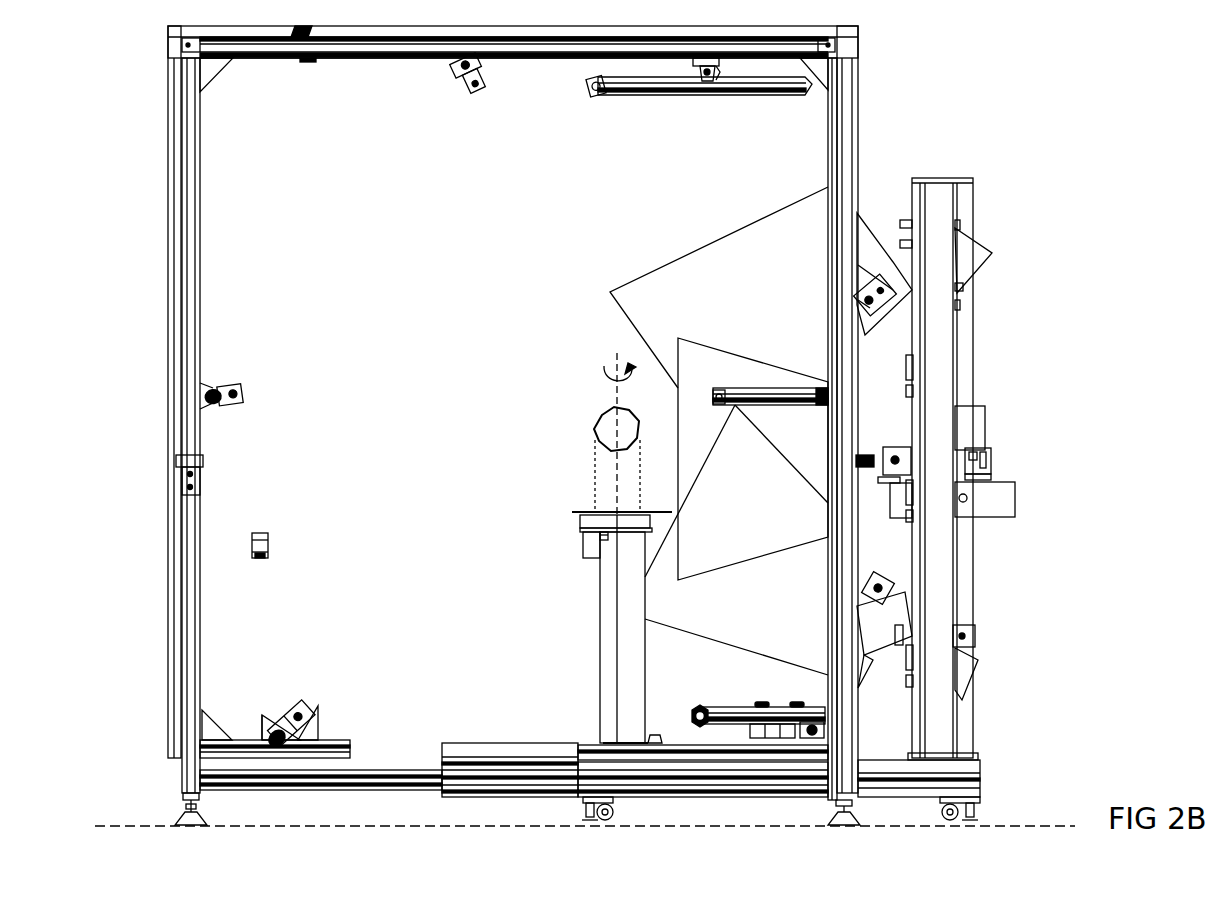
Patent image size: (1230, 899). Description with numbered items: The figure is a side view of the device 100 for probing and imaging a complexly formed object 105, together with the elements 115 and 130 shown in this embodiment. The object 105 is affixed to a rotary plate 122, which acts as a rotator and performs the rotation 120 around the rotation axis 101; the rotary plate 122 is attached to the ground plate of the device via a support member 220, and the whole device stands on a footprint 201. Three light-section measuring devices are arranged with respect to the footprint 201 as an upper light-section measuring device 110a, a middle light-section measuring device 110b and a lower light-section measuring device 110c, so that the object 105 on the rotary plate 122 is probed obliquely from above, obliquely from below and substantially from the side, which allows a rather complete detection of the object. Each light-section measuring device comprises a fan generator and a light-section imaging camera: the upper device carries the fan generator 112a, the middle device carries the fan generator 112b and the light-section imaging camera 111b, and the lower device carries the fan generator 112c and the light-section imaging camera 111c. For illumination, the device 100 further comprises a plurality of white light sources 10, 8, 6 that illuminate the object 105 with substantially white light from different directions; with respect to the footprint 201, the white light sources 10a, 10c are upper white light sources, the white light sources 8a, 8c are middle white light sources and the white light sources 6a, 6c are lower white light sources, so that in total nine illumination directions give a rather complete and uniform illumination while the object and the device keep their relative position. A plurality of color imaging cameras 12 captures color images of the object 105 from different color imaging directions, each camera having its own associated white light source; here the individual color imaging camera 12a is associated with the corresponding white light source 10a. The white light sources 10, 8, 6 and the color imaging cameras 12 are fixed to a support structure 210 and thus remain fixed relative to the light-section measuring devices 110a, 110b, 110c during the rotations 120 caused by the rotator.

The device 100 is at (102, 54).
The footprint 201 is at (118, 825).
The support structure 210 is at (345, 60).
The support member 220 is at (598, 689).
The rotation axis 101 is at (616, 357).
The rotation 120 is at (602, 379).
The complexly formed object 105 is at (596, 431).
The rotary plate 122 is at (575, 512).
The element 130 is at (713, 372).
The element 115 is at (813, 536).
The white light source 8 is at (787, 378).
The middle white light source 8a is at (774, 408).
The middle white light source 8c is at (240, 392).
The white light source 10 is at (597, 93).
The upper white light source 10a is at (640, 100).
The upper white light source 10c is at (478, 97).
The color imaging camera 12 is at (700, 99).
The individual color imaging camera 12a is at (716, 82).
The white light source 6 is at (742, 697).
The lower white light source 6a is at (701, 707).
The lower white light source 6c is at (292, 705).
The upper light-section measuring device 110a is at (996, 164).
The middle light-section measuring device 110b is at (1080, 338).
The lower light-section measuring device 110c is at (1070, 563).
The light-section imaging camera 111b is at (983, 447).
The light-section imaging camera 111c is at (956, 632).
The fan generator 112a is at (876, 282).
The fan generator 112b is at (898, 447).
The fan generator 112c is at (884, 583).